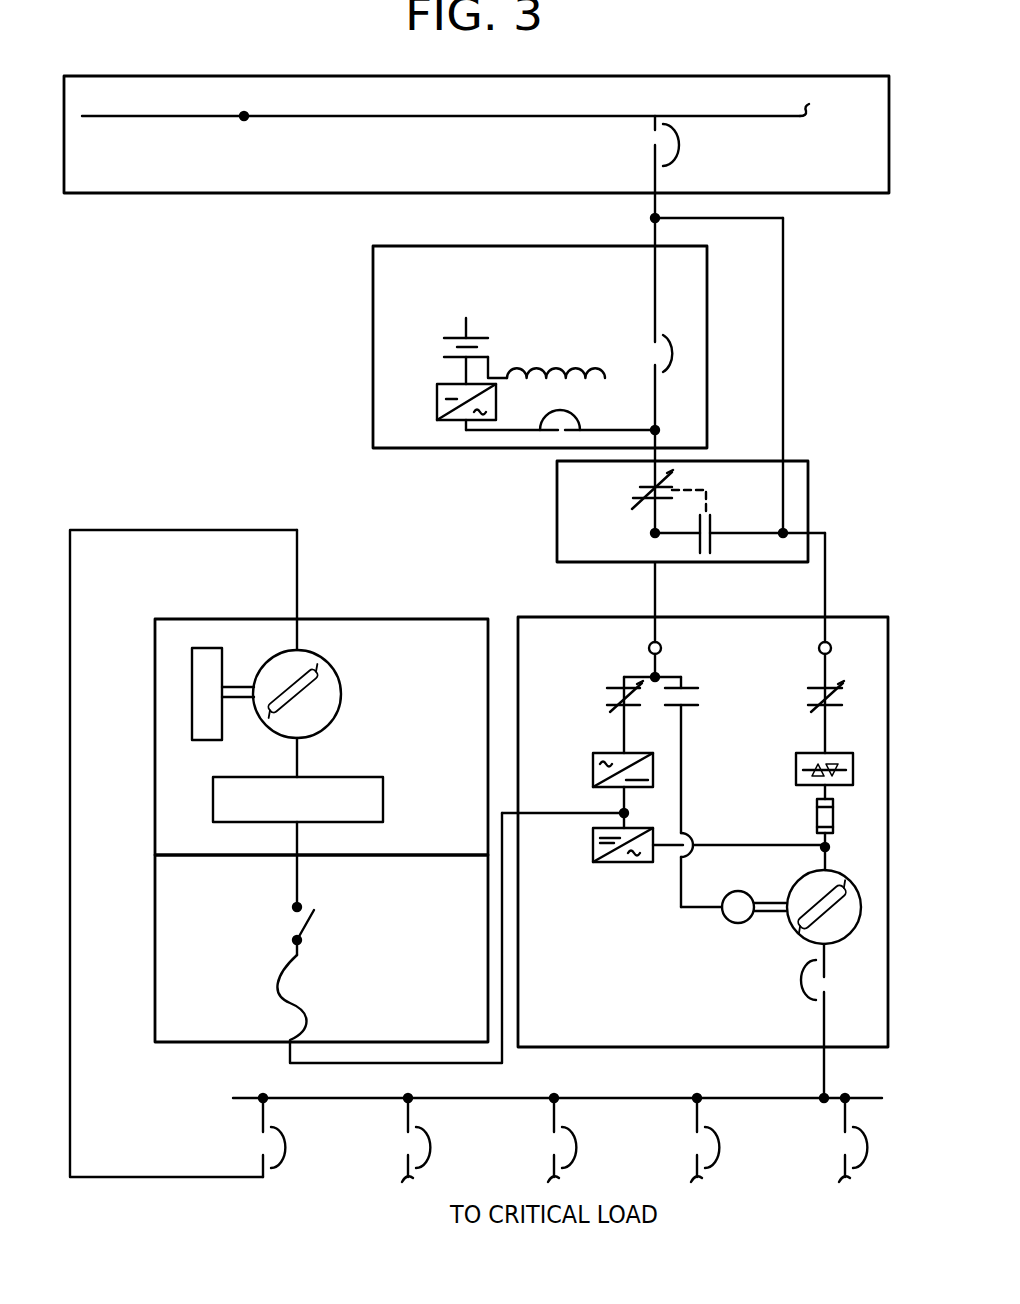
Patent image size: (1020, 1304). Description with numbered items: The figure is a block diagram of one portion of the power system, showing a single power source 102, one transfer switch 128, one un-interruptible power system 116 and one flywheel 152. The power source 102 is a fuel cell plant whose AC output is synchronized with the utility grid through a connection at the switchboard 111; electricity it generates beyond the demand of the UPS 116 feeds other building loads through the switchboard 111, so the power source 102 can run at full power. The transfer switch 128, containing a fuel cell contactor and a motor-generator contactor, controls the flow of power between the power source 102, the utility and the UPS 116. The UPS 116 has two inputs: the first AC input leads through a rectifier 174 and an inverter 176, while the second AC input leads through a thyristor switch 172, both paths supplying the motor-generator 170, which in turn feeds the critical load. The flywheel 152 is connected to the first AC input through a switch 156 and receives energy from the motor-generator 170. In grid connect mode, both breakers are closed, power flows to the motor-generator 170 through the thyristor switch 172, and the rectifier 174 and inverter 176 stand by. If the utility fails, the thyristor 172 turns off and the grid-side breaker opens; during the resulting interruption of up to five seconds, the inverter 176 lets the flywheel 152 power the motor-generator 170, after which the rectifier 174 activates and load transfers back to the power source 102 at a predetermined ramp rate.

The switchboard 111 is at (295, 193).
The power source 102 is at (373, 347).
The transfer switch 128 is at (557, 504).
The un-interruptible power system (UPS) 116 is at (676, 811).
The rotary device (flywheel) 152 is at (155, 728).
The switch 156 is at (155, 955).
The rectifier 174 is at (593, 754).
The inverter 176 is at (593, 843).
The thyristor switch 172 is at (796, 769).
The motor-generator 170 is at (797, 880).